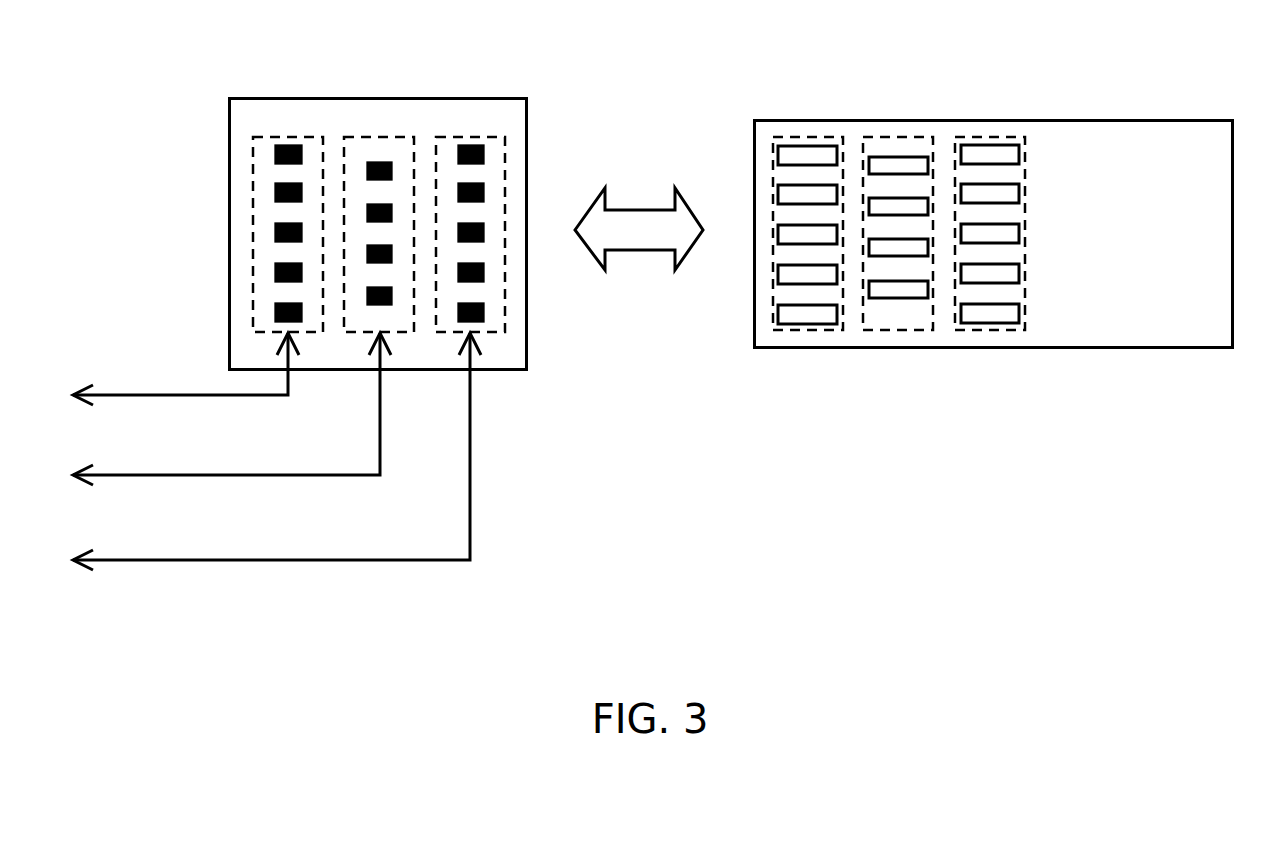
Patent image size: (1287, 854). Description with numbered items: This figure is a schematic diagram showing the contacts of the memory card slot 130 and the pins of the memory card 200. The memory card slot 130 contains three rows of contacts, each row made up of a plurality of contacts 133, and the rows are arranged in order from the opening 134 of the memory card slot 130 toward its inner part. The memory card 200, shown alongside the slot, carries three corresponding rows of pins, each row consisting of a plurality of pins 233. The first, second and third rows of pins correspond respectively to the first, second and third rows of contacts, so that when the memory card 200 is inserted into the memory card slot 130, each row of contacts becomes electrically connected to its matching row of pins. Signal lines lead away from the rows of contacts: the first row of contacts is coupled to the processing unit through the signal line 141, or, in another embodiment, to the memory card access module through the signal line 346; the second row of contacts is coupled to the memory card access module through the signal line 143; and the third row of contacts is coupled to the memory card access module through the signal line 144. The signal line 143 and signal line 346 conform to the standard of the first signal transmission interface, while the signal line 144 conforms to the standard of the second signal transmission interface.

The memory card slot 130 is at (229, 118).
The contact 133 is at (275, 192).
The opening 134 is at (537, 115).
The signal line 141 is at (277, 451).
The signal line 346 is at (232, 550).
The signal line 143 is at (197, 464).
The signal line 144 is at (160, 383).
The memory card 200 is at (1120, 120).
The pin 233 is at (1007, 193).